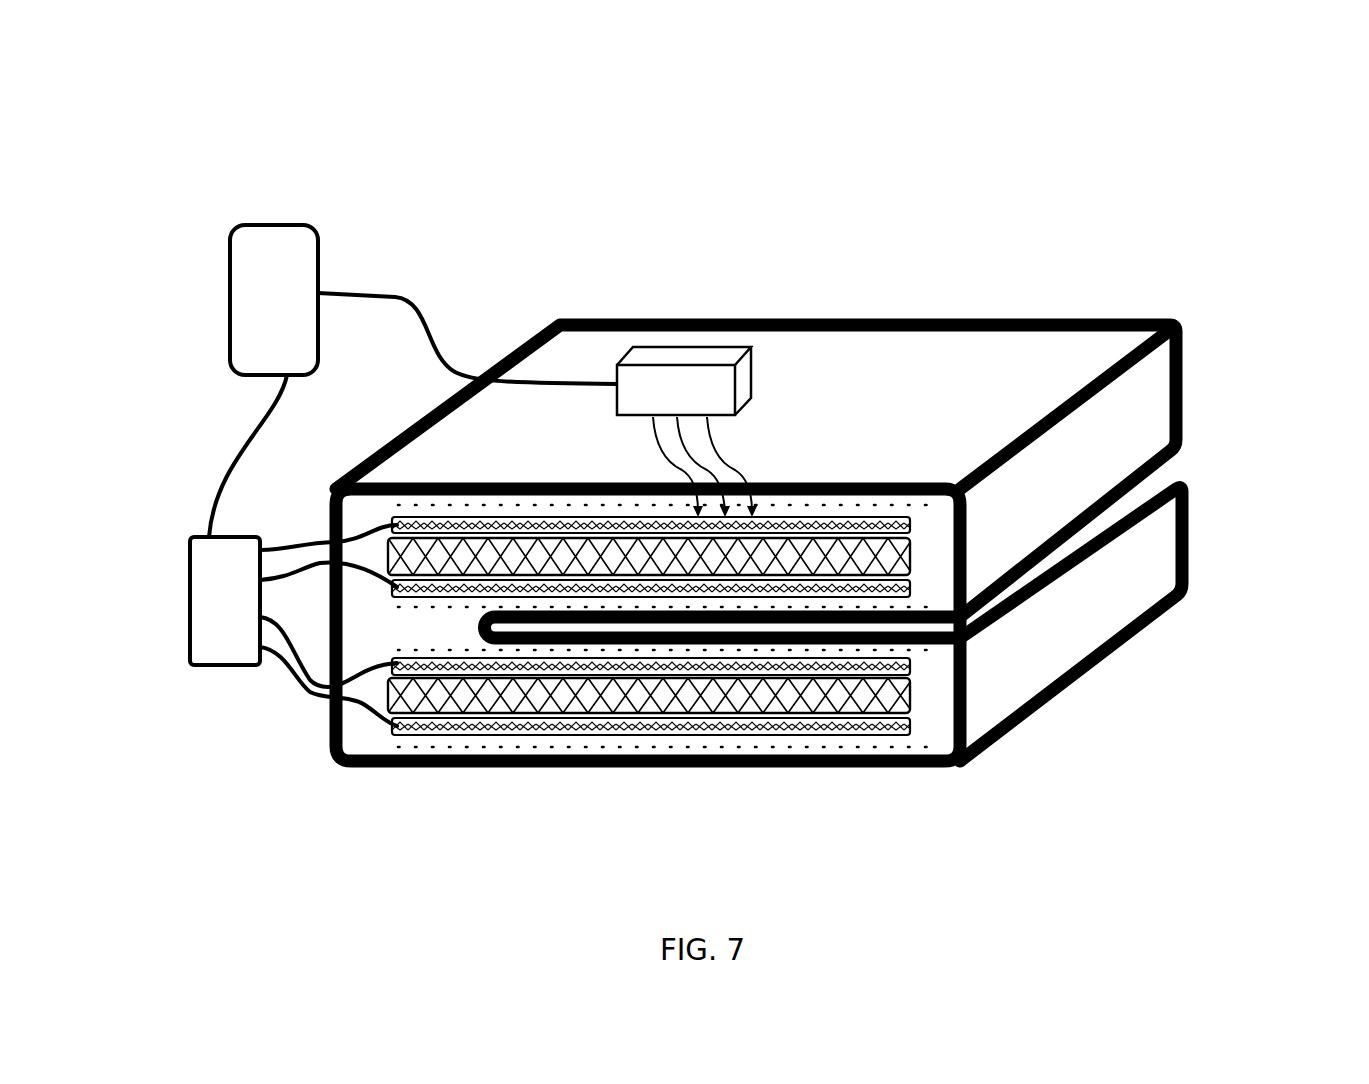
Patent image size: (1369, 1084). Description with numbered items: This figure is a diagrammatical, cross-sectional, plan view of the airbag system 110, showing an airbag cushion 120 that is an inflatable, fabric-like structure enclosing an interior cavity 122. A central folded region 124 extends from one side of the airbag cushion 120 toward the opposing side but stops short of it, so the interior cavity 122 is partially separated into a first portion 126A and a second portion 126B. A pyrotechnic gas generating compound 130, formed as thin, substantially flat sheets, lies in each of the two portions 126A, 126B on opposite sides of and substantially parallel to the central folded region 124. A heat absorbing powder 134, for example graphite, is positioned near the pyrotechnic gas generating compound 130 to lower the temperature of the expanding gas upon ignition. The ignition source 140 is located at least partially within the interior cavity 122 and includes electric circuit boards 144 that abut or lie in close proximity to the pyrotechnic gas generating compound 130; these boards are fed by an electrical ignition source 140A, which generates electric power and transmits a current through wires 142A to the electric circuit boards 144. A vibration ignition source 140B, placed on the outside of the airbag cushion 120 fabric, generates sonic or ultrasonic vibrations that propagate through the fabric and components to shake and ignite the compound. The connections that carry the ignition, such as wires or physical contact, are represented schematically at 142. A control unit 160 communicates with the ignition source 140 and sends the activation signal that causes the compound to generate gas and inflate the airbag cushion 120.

The airbag system 110 is at (463, 152).
The airbag cushion 120 is at (865, 322).
The interior cavity 122 is at (933, 737).
The central folded region 124 is at (1180, 470).
The first portion 126A is at (1215, 314).
The second portion 126B is at (1225, 483).
The pyrotechnic gas generating compound 130 is at (873, 543).
The heat absorbing powder 134 is at (847, 747).
The ignition source 140 is at (250, 615).
The electrical ignition source 140A is at (190, 597).
The vibration ignition source 140B is at (703, 357).
The ignition communication connections 142 is at (318, 730).
The wires 142A is at (297, 685).
The electric circuit boards 144 is at (913, 586).
The control unit 160 is at (288, 330).